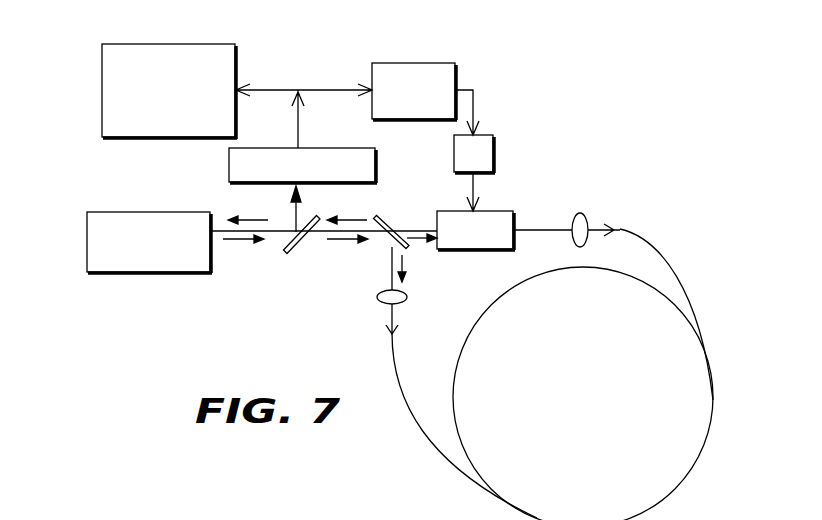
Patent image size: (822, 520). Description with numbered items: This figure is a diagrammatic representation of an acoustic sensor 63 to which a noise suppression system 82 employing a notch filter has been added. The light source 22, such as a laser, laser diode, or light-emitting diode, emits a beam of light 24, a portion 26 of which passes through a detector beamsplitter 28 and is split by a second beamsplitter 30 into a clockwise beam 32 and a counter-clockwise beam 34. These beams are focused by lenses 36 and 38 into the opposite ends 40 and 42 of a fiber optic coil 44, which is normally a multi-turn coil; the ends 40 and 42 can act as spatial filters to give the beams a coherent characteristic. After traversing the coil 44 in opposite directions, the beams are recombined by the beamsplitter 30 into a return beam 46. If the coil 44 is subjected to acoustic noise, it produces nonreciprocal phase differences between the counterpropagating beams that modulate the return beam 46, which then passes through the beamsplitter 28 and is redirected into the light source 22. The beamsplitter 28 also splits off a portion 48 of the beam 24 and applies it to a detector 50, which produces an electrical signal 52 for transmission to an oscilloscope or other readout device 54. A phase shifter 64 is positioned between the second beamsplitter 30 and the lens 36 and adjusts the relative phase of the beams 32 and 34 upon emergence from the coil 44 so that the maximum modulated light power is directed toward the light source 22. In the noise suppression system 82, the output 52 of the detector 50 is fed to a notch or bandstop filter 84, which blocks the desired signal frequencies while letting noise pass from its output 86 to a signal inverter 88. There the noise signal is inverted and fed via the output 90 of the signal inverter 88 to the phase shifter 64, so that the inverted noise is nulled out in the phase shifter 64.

The light source 22 is at (165, 212).
The beam of light 24 is at (228, 239).
The portion of beam 26 is at (333, 240).
The detector beamsplitter 28 is at (290, 252).
The second beamsplitter 30 is at (385, 217).
The clockwise beam 32 is at (412, 243).
The counter-clockwise beam 34 is at (402, 258).
The lens 36 is at (578, 213).
The lens 38 is at (384, 302).
The end of fiber optic coil 40 is at (613, 228).
The end of fiber optic coil 42 is at (398, 330).
The fiber optic coil 44 is at (655, 506).
The return beam 46 is at (255, 220).
The portion of beam 48 is at (296, 207).
The detector 50 is at (376, 163).
The electrical signal 52 is at (298, 128).
The readout device 54 is at (237, 72).
The sensor 63 is at (673, 250).
The phase shifter 64 is at (473, 249).
The noise suppression system 82 is at (493, 63).
The notch or bandstop filter 84 is at (404, 63).
The output of notch filter 86 is at (473, 110).
The signal inverter 88 is at (494, 149).
The output of signal inverter 90 is at (473, 190).